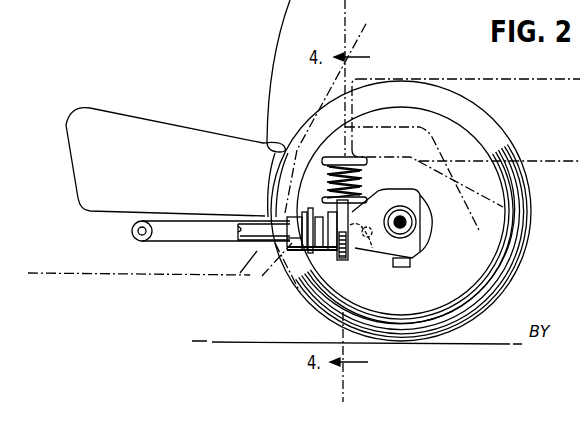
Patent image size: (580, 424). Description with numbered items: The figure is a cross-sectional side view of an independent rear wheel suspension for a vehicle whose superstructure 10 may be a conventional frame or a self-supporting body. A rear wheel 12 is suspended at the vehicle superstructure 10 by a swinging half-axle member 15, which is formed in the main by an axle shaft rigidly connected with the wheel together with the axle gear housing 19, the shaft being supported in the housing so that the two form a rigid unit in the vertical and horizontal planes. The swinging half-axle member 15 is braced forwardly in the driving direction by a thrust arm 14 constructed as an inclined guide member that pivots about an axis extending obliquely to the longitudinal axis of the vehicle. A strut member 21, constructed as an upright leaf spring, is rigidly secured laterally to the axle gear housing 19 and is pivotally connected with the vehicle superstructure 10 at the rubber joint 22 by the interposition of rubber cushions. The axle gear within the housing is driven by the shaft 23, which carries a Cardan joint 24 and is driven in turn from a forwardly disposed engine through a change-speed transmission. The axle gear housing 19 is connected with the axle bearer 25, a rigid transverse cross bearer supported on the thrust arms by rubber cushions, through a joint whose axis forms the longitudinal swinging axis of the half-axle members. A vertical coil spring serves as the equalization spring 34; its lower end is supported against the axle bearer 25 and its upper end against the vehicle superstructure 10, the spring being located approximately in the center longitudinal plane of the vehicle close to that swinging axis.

The vehicle superstructure 10 is at (100, 276).
The rear wheel 12 is at (523, 259).
The thrust arm 14 is at (405, 263).
The swinging half-axle member 15 is at (396, 226).
The axle gear housing 19 is at (414, 233).
The strut member 21 is at (190, 232).
The rubber joint 22 is at (134, 236).
The shaft 23 is at (256, 233).
The Cardan joint 24 is at (308, 212).
The axle bearer 25 is at (348, 255).
The equalization spring 34 is at (360, 187).